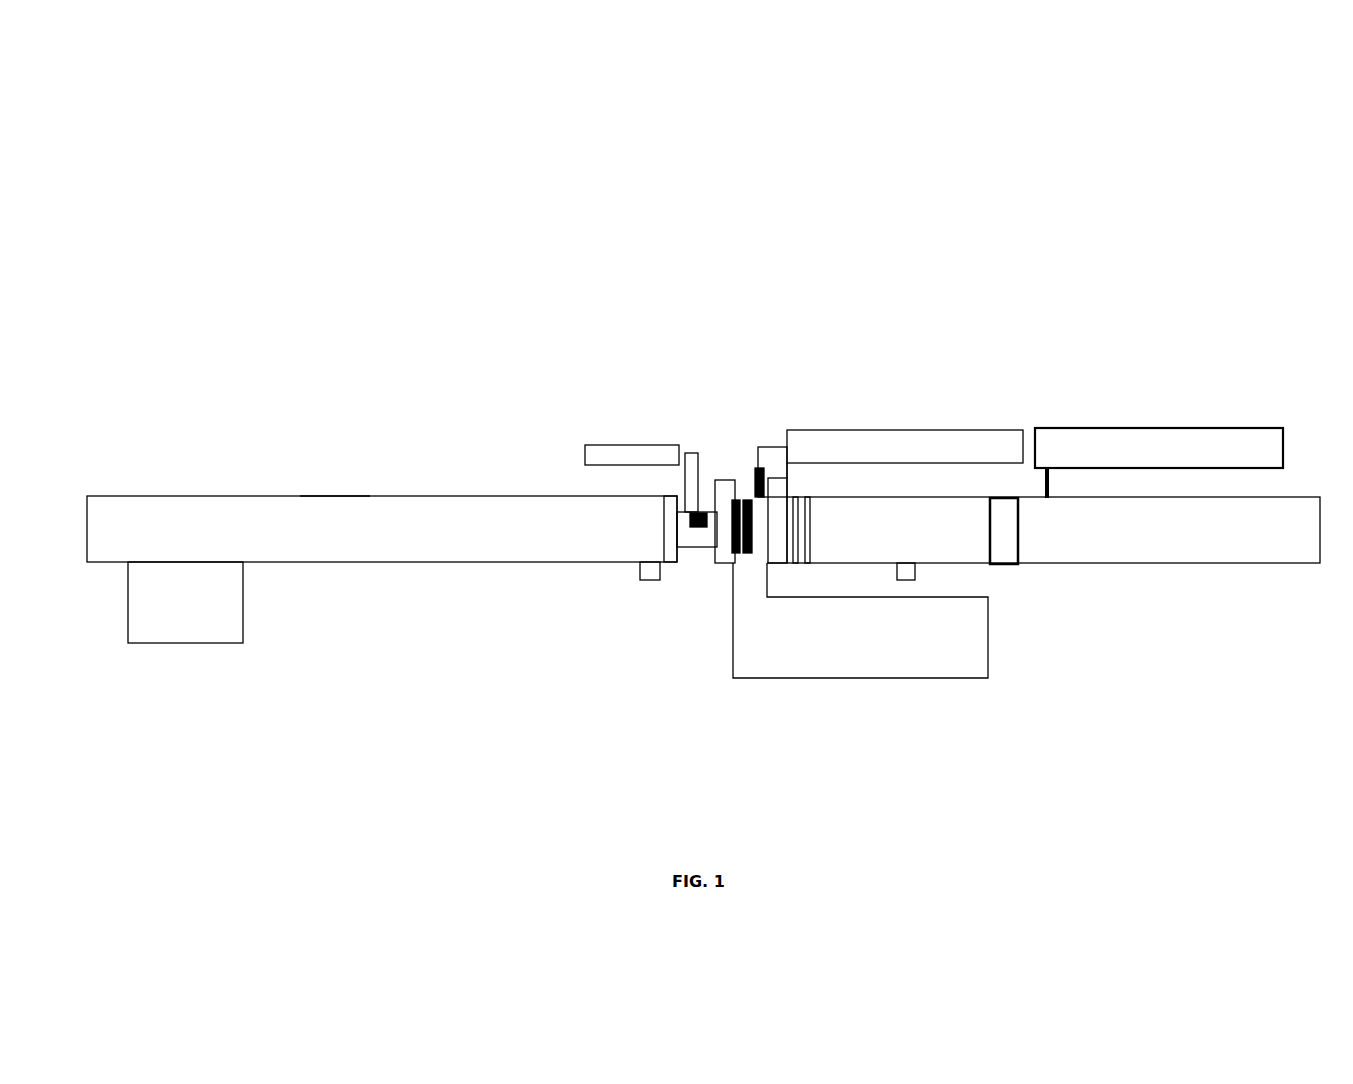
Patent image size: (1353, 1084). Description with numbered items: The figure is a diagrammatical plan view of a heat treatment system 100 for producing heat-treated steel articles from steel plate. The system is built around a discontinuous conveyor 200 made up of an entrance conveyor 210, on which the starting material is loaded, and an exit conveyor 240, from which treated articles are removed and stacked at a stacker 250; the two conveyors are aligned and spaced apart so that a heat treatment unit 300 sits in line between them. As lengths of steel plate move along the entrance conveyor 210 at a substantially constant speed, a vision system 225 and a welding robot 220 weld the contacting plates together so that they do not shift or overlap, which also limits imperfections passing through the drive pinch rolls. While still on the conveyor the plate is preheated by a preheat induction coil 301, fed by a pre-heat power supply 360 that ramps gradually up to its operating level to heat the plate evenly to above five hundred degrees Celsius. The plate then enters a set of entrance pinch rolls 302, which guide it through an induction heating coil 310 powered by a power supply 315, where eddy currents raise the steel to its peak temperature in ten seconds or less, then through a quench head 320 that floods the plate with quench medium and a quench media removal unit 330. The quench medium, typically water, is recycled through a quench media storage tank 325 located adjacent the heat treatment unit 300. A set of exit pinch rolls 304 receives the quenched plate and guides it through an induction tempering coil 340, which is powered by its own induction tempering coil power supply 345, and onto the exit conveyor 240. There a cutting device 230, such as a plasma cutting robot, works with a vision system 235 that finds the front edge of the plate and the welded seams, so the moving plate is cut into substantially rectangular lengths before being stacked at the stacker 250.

The heat treatment system 100 is at (430, 167).
The discontinuous conveyor 200 is at (287, 363).
The entrance conveyor 210 is at (1139, 563).
The welding robot 220 is at (917, 580).
The vision system 225 is at (1003, 498).
The cutting device 230 is at (642, 580).
The vision system 235 is at (668, 562).
The exit conveyor 240 is at (335, 496).
The stacker 250 is at (193, 643).
The heat treatment unit 300 is at (723, 580).
The preheat induction coil 301 is at (806, 497).
The entrance pinch rolls 302 is at (784, 478).
The exit pinch rolls 304 is at (718, 563).
The induction heating coil 310 is at (762, 468).
The power supply 315 is at (898, 430).
The quench head 320 is at (748, 500).
The quench media storage tank 325 is at (870, 658).
The quench media removal unit 330 is at (738, 500).
The induction tempering coil 340 is at (692, 512).
The induction tempering coil power supply 345 is at (630, 445).
The pre-heat power supply 360 is at (1165, 428).